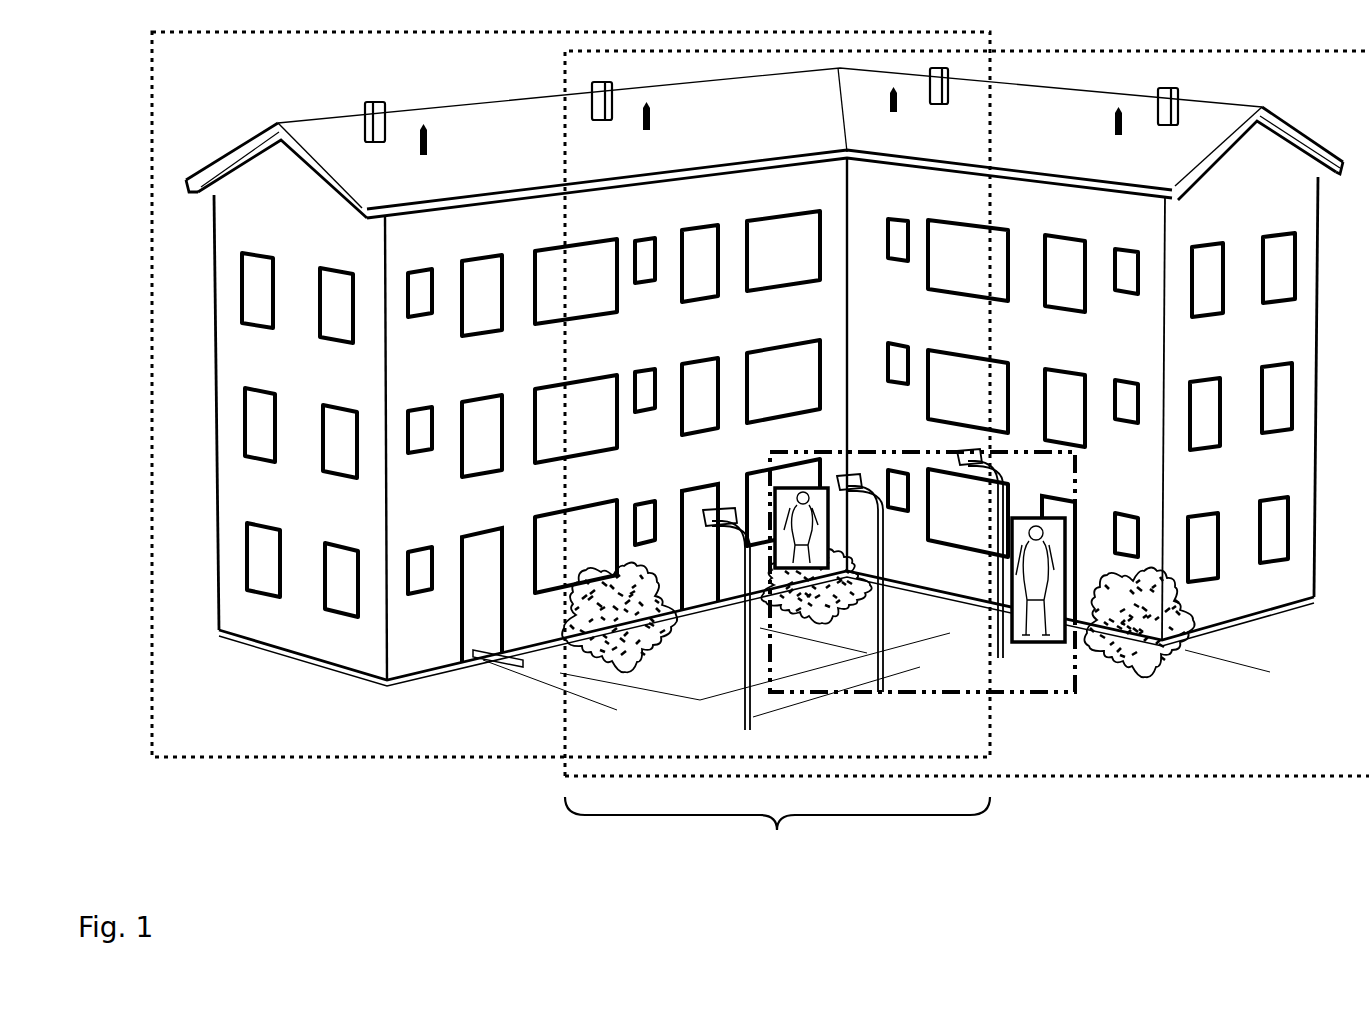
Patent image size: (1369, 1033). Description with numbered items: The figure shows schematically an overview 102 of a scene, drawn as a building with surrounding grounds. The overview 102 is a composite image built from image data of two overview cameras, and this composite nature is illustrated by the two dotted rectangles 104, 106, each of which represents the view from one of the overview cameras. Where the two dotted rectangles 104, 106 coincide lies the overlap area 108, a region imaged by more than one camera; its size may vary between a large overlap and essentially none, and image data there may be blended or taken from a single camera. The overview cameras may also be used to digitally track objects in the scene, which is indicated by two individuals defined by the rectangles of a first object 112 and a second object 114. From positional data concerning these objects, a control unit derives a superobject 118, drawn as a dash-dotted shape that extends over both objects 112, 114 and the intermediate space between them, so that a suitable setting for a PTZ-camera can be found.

The overview 102 is at (1262, 836).
The dotted rectangle 104 is at (225, 757).
The dotted rectangle 106 is at (1118, 780).
The overlap area 108 is at (777, 832).
The first object 112 is at (830, 503).
The second object 114 is at (1065, 643).
The superobject 118 is at (1077, 462).